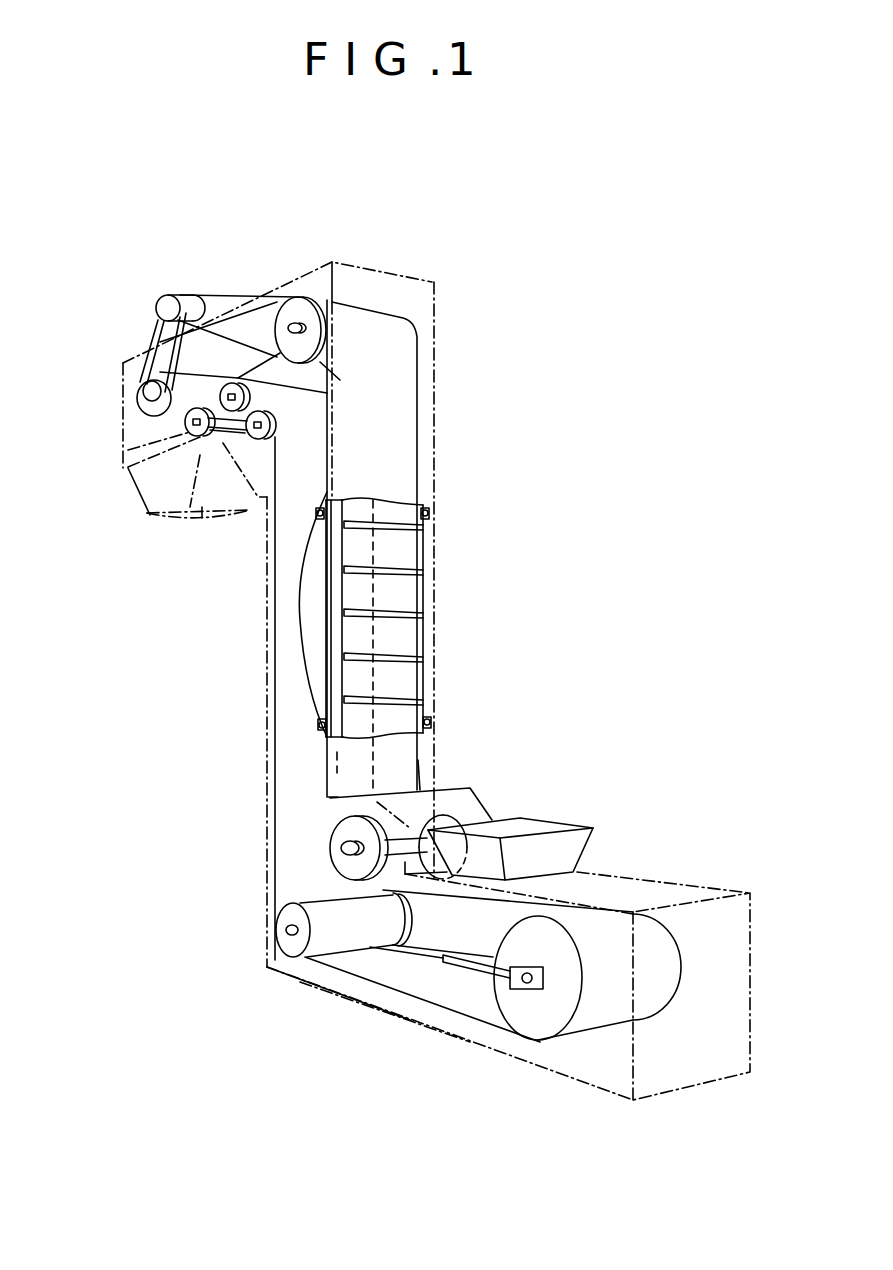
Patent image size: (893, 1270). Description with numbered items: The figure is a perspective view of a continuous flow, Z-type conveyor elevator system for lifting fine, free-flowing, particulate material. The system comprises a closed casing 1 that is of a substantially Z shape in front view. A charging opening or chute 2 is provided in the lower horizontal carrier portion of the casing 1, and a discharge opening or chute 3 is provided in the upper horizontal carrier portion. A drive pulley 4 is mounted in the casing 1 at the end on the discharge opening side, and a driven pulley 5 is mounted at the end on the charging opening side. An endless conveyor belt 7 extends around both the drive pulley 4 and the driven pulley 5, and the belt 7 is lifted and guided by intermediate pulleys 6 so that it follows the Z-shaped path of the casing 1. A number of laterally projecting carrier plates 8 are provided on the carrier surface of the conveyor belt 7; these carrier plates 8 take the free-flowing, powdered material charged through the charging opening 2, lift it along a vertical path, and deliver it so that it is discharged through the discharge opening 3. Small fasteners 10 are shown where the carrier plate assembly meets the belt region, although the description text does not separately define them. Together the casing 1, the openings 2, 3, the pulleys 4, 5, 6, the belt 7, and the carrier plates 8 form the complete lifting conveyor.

The closed casing 1 is at (403, 276).
The charging opening 2 is at (577, 848).
The discharge opening 3 is at (147, 497).
The drive pulley 4 is at (148, 420).
The driven pulley 5 is at (535, 1018).
The intermediate pulleys 6 is at (340, 832).
The endless conveyor belt 7 is at (413, 763).
The carrier plates 8 is at (387, 532).
The bolts 10 is at (317, 517).